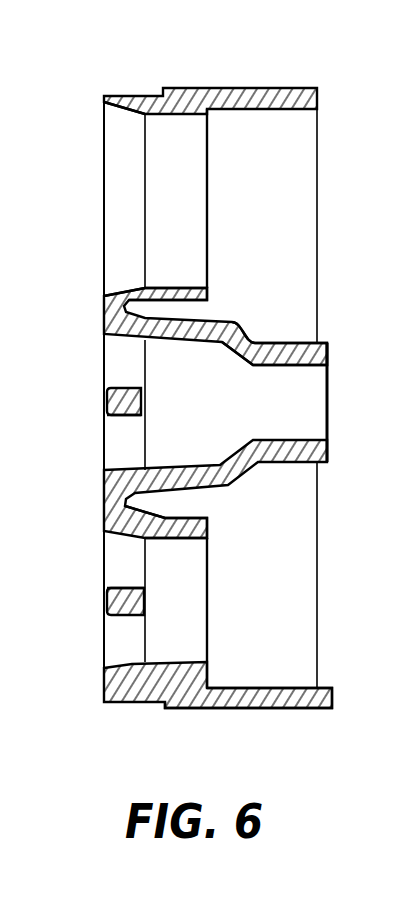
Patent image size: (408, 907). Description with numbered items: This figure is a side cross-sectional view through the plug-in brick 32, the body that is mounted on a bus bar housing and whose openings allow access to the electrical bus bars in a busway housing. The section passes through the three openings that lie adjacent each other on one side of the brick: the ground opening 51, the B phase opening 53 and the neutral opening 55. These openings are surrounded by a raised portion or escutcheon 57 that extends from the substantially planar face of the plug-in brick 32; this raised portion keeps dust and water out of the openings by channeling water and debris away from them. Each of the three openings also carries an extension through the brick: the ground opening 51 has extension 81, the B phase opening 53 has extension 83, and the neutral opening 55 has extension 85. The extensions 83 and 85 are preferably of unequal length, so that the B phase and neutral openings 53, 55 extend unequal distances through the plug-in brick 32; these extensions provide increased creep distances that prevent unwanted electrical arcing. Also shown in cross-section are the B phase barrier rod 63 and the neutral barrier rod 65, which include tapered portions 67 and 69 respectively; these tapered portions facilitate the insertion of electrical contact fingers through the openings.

The plug-in brick 32 is at (242, 88).
The ground opening 51 is at (114, 105).
The B phase opening 53 is at (108, 337).
The extension 81 is at (208, 292).
The extension 83 is at (321, 343).
The B phase barrier rod 63 is at (107, 400).
The tapered portion 67 is at (107, 415).
The raised portion or escutcheon 57 is at (104, 505).
The extension 85 is at (207, 533).
The neutral barrier rod 65 is at (107, 603).
The tapered portion 69 is at (107, 589).
The neutral opening 55 is at (110, 664).